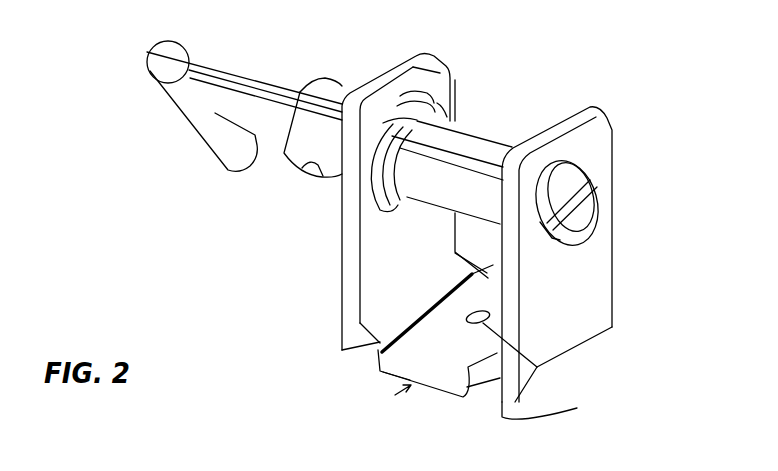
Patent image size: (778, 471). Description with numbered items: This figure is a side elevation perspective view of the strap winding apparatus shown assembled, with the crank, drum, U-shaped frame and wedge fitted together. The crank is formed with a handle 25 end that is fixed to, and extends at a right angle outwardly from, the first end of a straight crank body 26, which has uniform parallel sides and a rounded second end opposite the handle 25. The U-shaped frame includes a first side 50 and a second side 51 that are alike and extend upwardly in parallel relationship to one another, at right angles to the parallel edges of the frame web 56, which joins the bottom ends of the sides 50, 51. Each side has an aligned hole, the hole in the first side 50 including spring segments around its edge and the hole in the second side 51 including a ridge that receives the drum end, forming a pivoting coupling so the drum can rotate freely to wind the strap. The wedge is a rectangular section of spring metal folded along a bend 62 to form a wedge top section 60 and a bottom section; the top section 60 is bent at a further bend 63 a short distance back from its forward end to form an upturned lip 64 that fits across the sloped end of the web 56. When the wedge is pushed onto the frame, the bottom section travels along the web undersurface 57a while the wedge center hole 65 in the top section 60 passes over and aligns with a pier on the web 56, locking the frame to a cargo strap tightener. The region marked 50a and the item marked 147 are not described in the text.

The handle 25 is at (207, 133).
The crank body 26 is at (255, 108).
The first side 50 is at (428, 238).
The bracket frame 50a is at (347, 220).
The second side 51 is at (590, 268).
The frame web 56 is at (410, 300).
The web undersurface 57a is at (557, 413).
The wedge top section 60 is at (457, 350).
The bend 62 is at (412, 372).
The bend 63 is at (342, 352).
The upturned lip 64 is at (490, 283).
The wedge center hole 65 is at (518, 368).
The direction arrow 147 is at (391, 398).